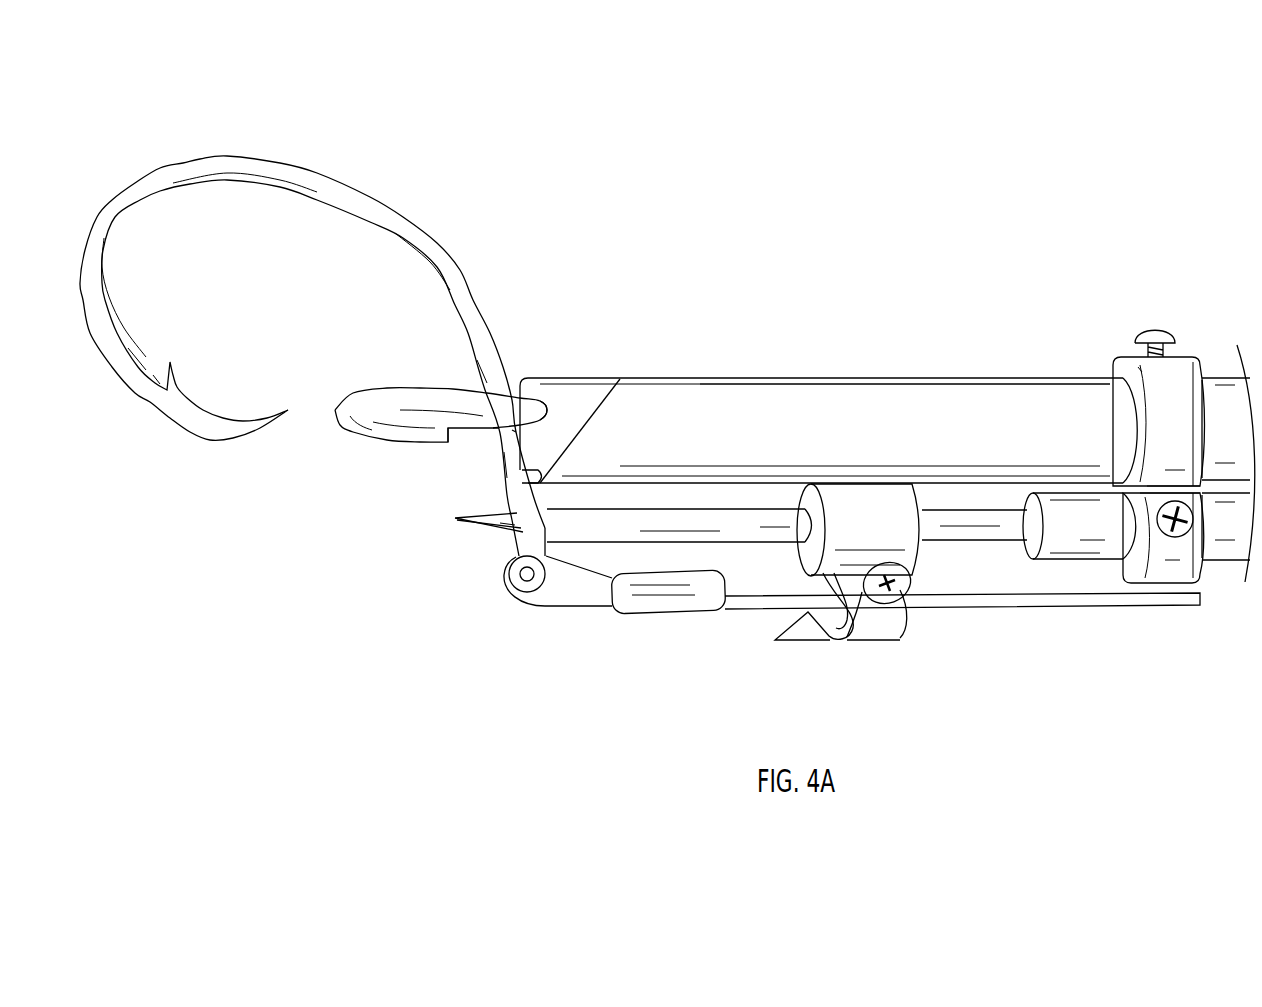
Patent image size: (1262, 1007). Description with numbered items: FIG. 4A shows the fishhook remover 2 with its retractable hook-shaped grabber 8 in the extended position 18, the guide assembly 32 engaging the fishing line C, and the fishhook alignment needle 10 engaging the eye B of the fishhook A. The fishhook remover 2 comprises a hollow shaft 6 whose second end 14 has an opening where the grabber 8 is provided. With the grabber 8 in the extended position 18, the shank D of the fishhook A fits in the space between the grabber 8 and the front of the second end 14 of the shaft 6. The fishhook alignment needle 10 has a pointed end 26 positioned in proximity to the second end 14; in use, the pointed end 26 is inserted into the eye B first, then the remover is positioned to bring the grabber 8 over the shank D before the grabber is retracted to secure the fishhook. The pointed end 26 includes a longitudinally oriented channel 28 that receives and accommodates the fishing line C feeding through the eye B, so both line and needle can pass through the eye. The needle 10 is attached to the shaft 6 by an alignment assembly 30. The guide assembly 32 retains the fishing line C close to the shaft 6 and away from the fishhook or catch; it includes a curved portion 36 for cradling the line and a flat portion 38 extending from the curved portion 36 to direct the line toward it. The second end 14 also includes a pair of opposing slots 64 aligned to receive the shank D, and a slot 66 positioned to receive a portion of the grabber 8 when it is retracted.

The fishhook A is at (197, 172).
The eye B is at (533, 607).
The fishing line C is at (583, 603).
The shank D is at (483, 365).
The fishhook remover 2 is at (776, 354).
The shaft 6 is at (993, 407).
The hook-shaped grabber 8 is at (367, 421).
The fishhook alignment needle 10 is at (728, 535).
The second end 14 is at (568, 393).
The extended position 18 is at (420, 446).
The pointed end 26 is at (455, 521).
The longitudinally oriented channel 28 is at (497, 533).
The alignment assembly 30 is at (1120, 537).
The guide assembly 32 is at (898, 630).
The curved portion 36 is at (843, 643).
The flat portion 38 is at (790, 642).
The opposing slots 64 is at (618, 379).
The slot 66 is at (537, 378).